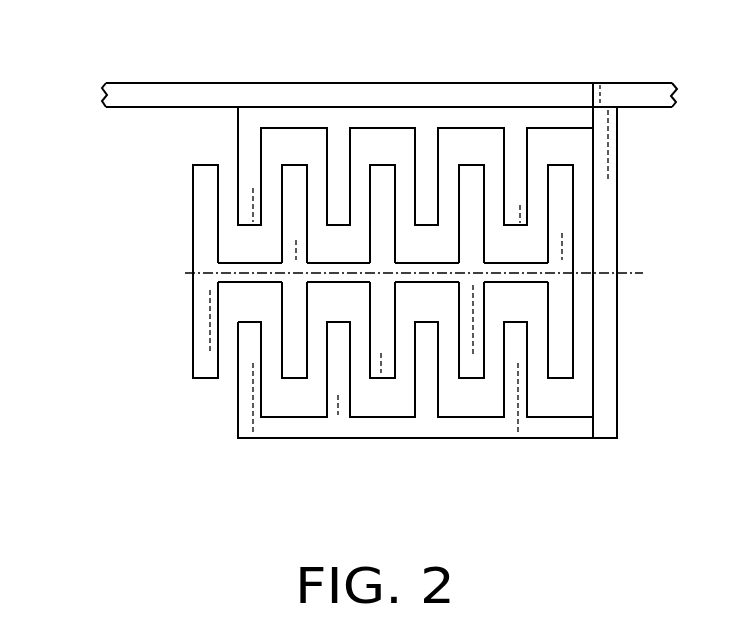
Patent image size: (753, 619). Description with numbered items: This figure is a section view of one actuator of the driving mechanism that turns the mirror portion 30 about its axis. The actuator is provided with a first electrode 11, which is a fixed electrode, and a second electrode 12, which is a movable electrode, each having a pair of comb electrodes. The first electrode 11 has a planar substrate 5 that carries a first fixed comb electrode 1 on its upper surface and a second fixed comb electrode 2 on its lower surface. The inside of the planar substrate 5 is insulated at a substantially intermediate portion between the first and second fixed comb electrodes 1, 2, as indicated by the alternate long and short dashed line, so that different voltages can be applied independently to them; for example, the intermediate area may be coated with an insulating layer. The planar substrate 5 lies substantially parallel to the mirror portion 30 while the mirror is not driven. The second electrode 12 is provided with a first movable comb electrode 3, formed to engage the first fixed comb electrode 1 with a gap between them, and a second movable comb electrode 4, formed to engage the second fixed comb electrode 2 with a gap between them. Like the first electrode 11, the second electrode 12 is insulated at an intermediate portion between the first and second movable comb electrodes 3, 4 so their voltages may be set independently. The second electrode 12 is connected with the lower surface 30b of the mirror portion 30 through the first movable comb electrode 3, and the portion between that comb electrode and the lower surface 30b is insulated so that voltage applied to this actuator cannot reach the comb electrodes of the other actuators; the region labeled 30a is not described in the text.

The first fixed comb electrode 1 is at (203, 210).
The second fixed comb electrode 2 is at (179, 330).
The first movable comb electrode 3 is at (517, 192).
The second movable comb electrode 4 is at (652, 203).
The planar substrate 5 is at (195, 273).
The first electrode 11 is at (328, 271).
The second electrode 12 is at (473, 260).
The mirror portion 30 is at (173, 92).
The first portion of wiring conductor 30a is at (582, 83).
The lower surface of the mirror portion 30b is at (663, 141).